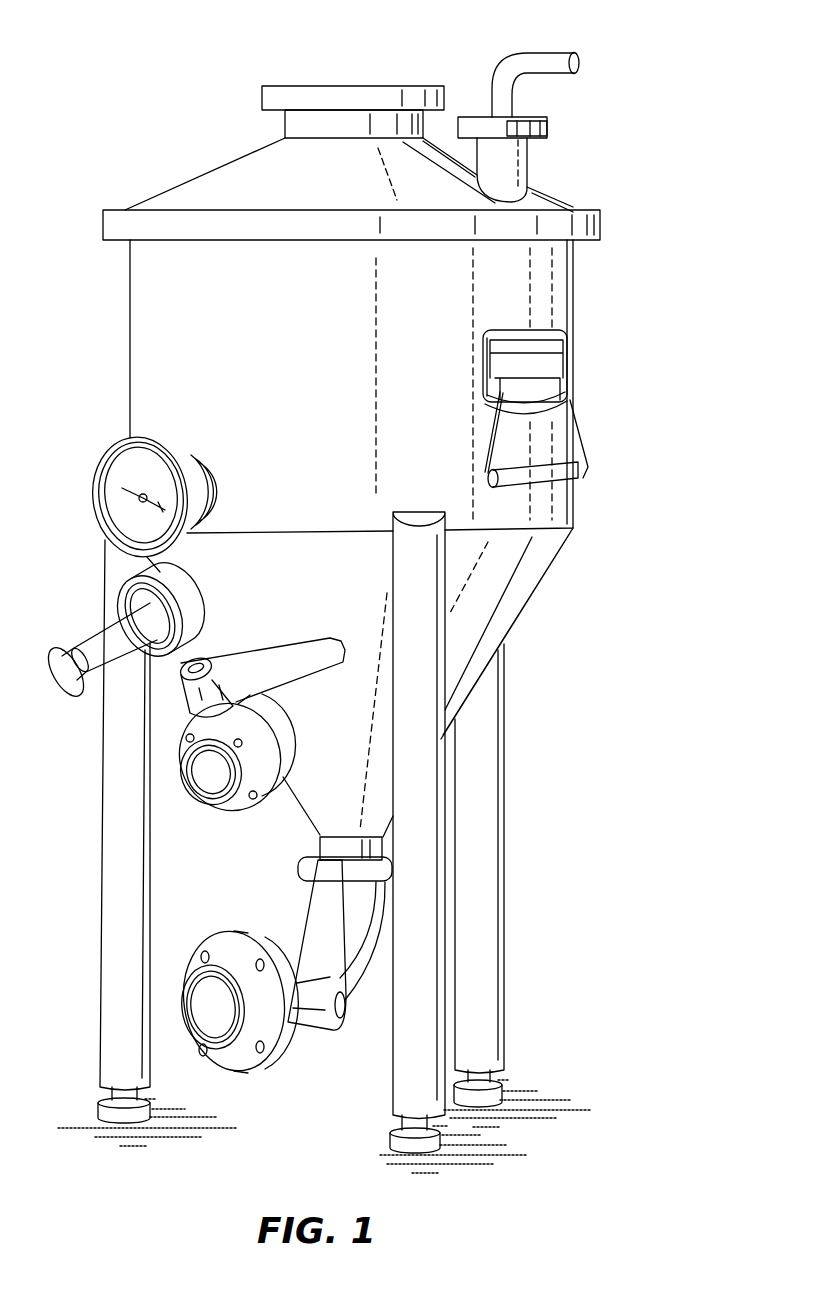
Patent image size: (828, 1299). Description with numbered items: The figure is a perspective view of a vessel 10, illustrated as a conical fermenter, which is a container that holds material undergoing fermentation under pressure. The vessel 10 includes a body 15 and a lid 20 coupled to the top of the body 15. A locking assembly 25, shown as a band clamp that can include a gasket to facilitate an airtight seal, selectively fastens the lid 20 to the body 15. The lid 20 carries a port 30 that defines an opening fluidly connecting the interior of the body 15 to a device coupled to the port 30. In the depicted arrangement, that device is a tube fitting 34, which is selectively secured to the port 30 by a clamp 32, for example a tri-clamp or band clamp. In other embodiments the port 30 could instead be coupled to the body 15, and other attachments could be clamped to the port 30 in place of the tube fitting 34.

The vessel 10 is at (375, 595).
The body 15 is at (567, 286).
The lid 20 is at (227, 173).
The locking assembly 25 is at (112, 225).
The port 30 is at (508, 166).
The clamp 32 is at (547, 121).
The tube fitting 34 is at (515, 63).